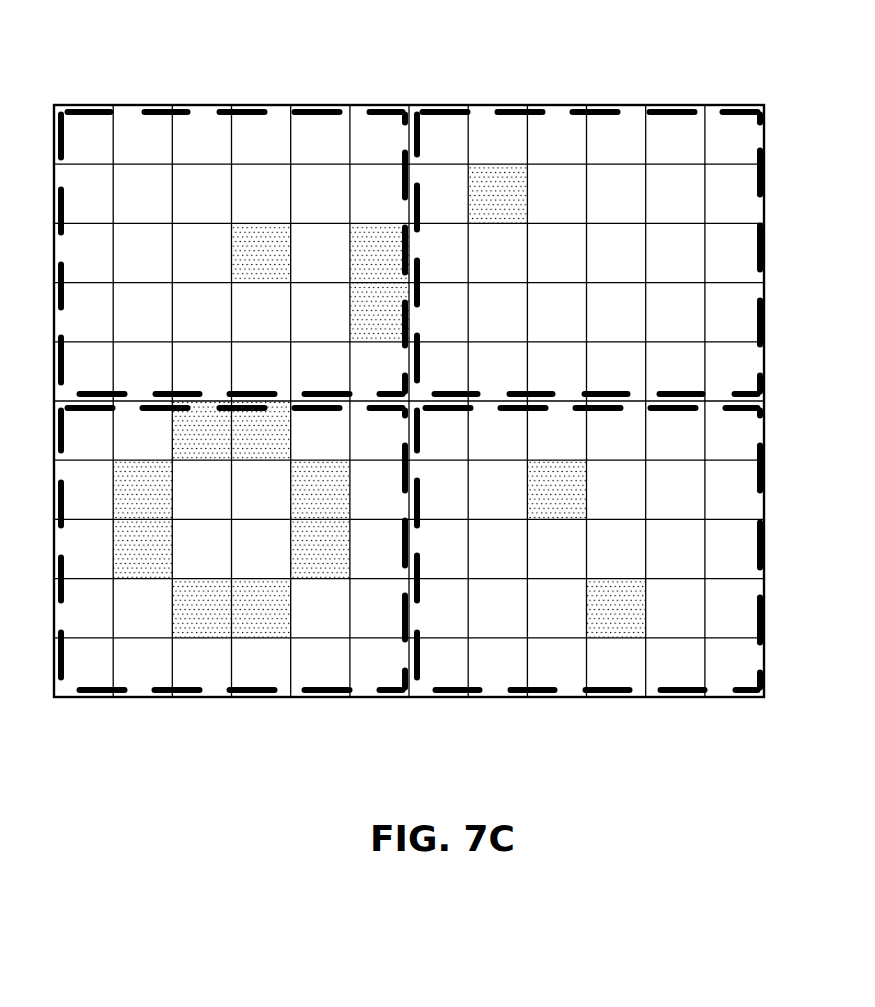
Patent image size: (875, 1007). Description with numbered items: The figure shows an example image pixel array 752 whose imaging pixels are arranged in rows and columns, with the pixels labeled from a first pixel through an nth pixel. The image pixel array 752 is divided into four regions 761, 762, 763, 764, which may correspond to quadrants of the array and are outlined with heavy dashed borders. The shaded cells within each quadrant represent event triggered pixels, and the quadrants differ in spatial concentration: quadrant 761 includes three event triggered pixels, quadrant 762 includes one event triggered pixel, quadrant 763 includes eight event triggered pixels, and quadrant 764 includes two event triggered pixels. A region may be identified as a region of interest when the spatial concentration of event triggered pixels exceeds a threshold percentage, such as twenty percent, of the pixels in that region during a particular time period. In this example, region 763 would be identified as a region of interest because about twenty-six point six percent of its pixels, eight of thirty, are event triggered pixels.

The image pixel array 752 is at (765, 106).
The region 761 is at (334, 107).
The region 762 is at (765, 196).
The region 763 is at (155, 691).
The region 764 is at (765, 489).